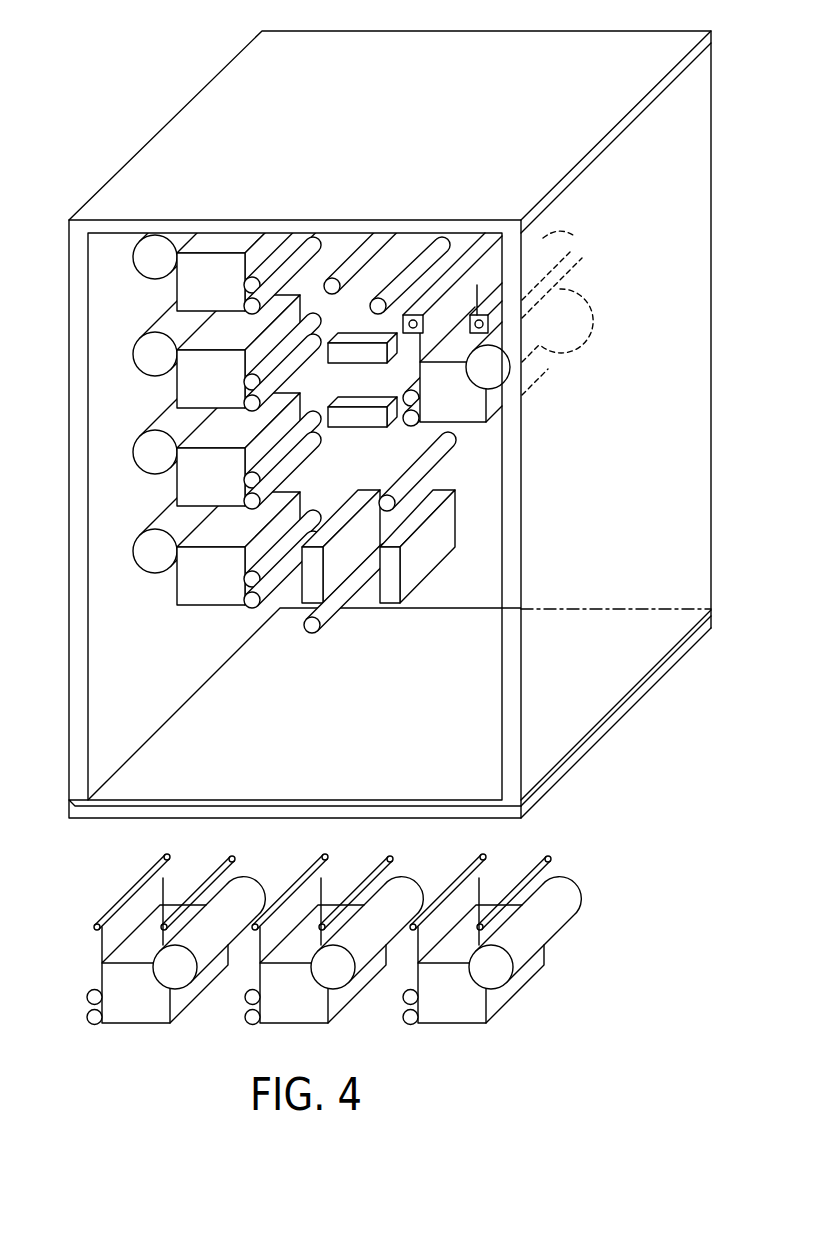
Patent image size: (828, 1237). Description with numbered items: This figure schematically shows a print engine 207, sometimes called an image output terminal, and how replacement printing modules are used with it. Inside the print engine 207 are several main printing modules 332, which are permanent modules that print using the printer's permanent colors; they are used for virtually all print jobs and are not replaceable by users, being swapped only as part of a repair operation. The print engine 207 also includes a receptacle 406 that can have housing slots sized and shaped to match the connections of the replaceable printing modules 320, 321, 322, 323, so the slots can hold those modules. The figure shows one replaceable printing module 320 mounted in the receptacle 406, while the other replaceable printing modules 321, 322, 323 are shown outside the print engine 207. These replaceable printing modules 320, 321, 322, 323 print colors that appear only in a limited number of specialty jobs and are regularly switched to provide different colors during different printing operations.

The print engine 207 is at (375, 141).
The replaceable printing module 320 is at (436, 408).
The replaceable printing module 321 is at (118, 1008).
The replaceable printing module 322 is at (334, 939).
The replaceable printing module 323 is at (492, 939).
The main printing module 332 is at (227, 394).
The receptacle 406 is at (467, 267).